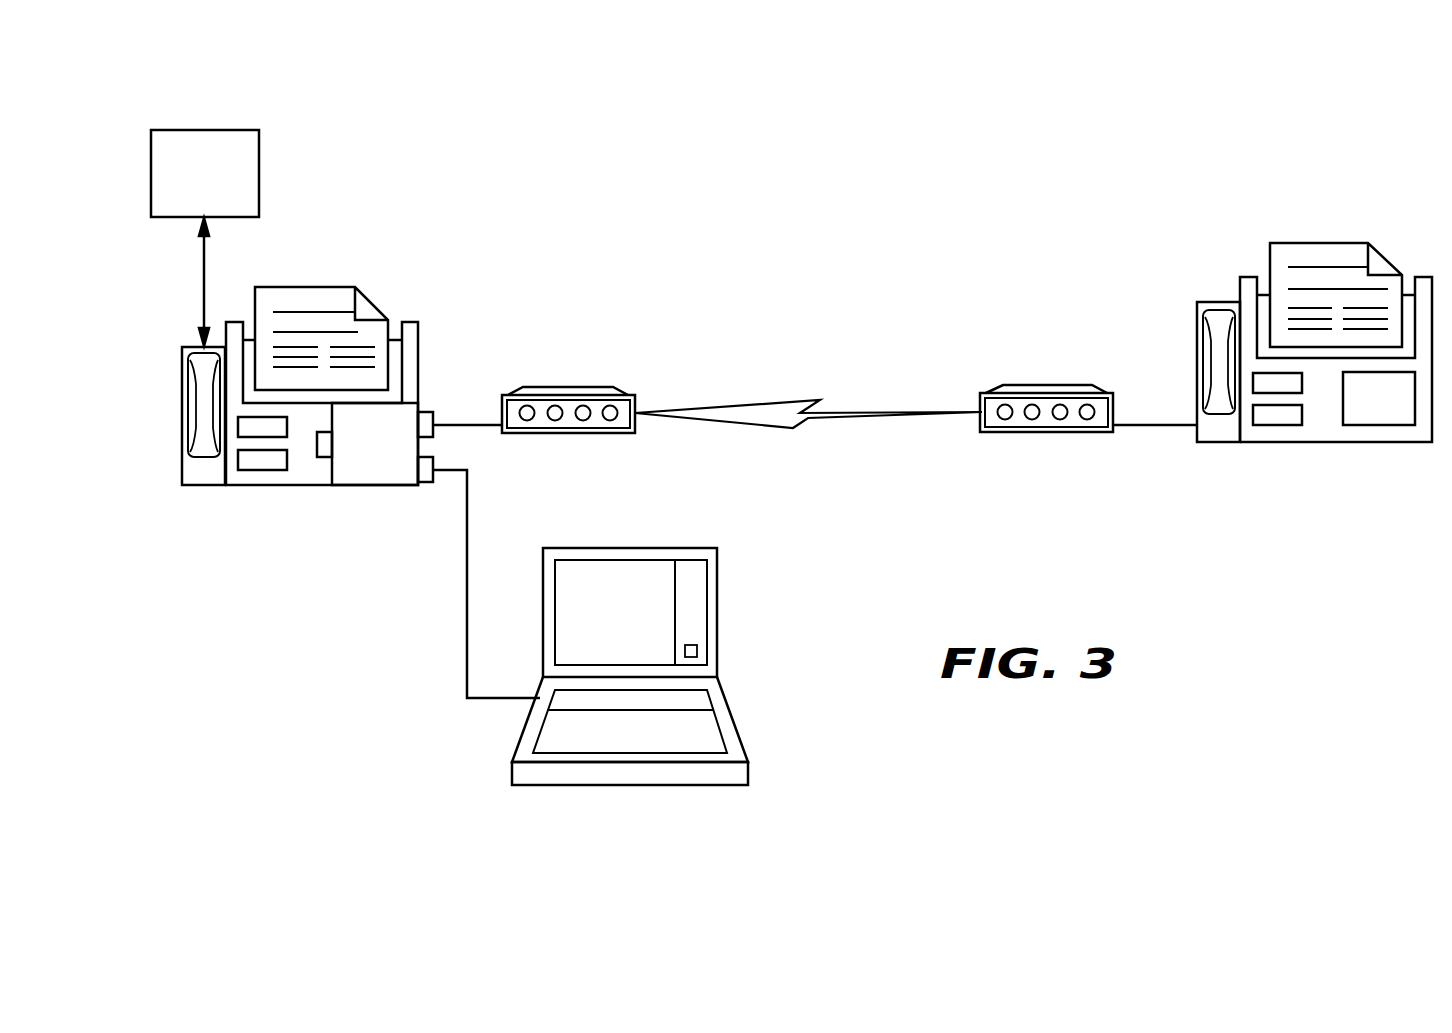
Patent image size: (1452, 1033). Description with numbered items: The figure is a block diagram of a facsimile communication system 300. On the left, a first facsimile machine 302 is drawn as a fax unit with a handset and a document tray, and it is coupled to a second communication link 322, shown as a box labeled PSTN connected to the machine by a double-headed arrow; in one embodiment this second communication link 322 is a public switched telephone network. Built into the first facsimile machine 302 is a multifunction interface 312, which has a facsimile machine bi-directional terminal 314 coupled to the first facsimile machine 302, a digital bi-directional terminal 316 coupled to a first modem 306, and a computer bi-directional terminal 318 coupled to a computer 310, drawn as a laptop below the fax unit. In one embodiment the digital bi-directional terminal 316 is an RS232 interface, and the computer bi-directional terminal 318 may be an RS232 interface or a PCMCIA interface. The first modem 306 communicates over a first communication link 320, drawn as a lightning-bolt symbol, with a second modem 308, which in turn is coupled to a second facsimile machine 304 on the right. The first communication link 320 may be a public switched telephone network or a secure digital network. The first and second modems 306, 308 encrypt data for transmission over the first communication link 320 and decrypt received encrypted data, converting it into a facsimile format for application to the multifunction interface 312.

The facsimile communication system 300 is at (336, 740).
The first facsimile machine 302 is at (332, 293).
The second facsimile machine 304 is at (1196, 313).
The first modem 306 is at (580, 387).
The second modem 308 is at (1015, 388).
The computer 310 is at (693, 552).
The multifunction interface 312 is at (393, 455).
The facsimile machine bi-directional terminal 314 is at (322, 452).
The digital bi-directional terminal 316 is at (429, 410).
The computer bi-directional terminal 318 is at (423, 484).
The first communication link 320 is at (773, 400).
The second communication link 322 is at (258, 162).